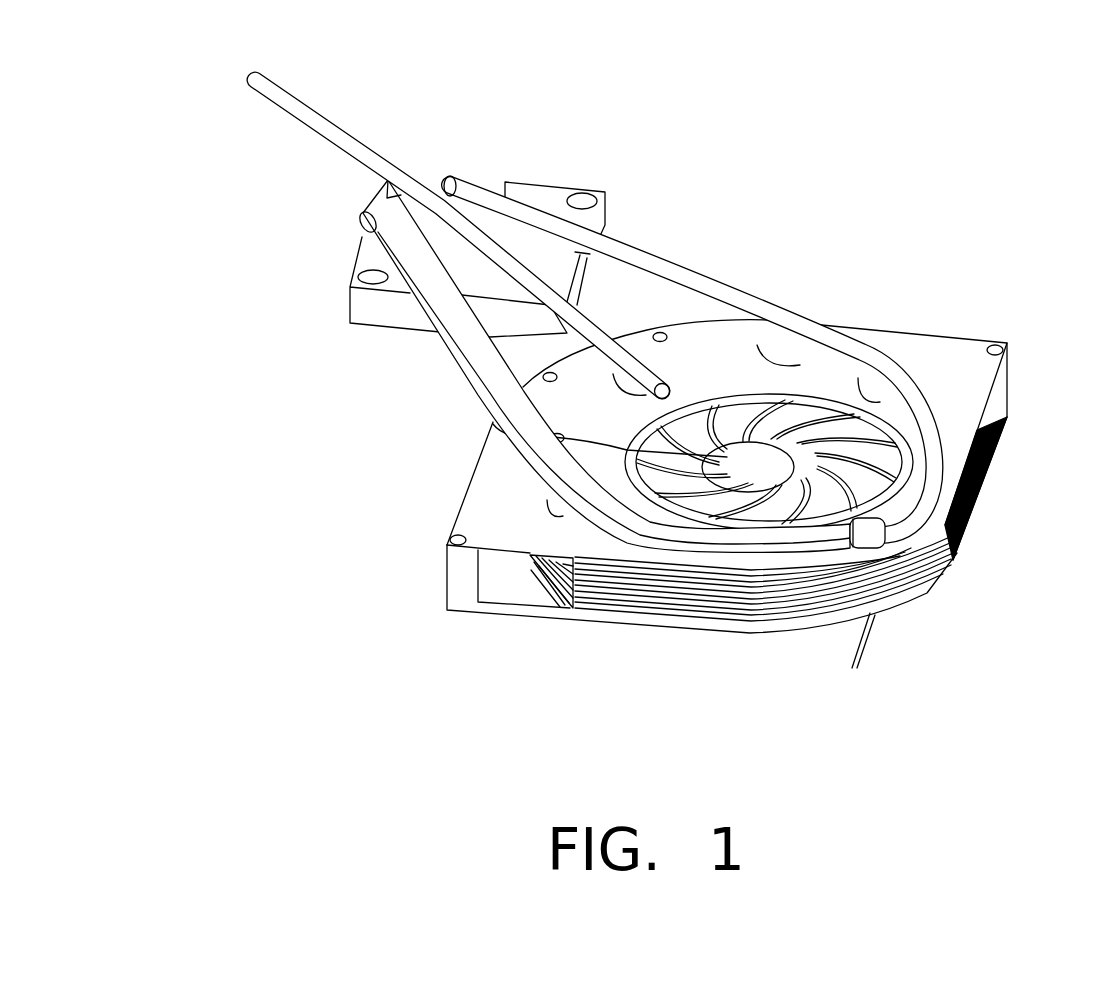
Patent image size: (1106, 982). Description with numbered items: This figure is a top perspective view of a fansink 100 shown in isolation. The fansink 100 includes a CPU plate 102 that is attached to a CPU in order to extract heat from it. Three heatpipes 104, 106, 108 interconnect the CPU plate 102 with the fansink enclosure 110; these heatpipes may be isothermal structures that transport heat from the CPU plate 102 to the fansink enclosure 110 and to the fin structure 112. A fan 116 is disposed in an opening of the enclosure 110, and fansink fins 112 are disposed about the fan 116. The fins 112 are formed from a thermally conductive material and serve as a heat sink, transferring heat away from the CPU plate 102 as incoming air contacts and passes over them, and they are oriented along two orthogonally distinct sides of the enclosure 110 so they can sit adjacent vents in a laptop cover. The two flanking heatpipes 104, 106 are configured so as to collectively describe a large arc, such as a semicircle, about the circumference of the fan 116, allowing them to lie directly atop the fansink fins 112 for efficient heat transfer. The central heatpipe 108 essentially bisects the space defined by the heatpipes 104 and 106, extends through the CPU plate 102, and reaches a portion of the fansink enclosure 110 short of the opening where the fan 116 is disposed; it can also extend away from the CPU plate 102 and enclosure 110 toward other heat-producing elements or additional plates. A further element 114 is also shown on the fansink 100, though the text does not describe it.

The fansink 100 is at (752, 192).
The CPU plate 102 is at (390, 330).
The heatpipe 104 is at (367, 215).
The heatpipe 106 is at (468, 183).
The central heatpipe 108 is at (308, 112).
The fansink enclosure 110 is at (928, 343).
The fansink fins 112 is at (907, 583).
The fan power wire 114 is at (860, 645).
The fan 116 is at (493, 440).